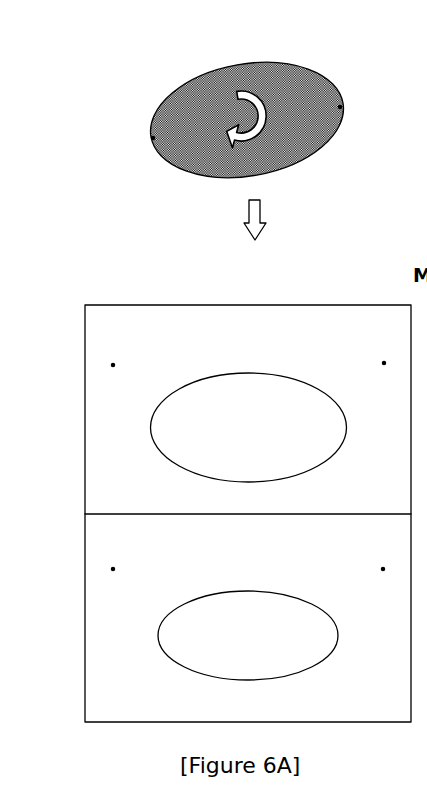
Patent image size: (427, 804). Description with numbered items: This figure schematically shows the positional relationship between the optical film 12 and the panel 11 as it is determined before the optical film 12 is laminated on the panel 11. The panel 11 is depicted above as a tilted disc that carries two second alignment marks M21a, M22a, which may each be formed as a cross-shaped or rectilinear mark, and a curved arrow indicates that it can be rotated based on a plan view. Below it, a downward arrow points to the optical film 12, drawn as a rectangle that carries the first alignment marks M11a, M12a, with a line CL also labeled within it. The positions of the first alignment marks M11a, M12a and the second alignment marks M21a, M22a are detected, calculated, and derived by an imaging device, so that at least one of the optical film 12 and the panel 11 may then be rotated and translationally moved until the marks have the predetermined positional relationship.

The panel 11 is at (190, 85).
The optical film 12 is at (85, 605).
The second alignment mark M21a is at (151, 137).
The second alignment mark M22a is at (342, 106).
The first alignment mark M11a is at (113, 365).
The first alignment mark M12a is at (384, 363).
The contour line / closed loop region CL is at (297, 378).